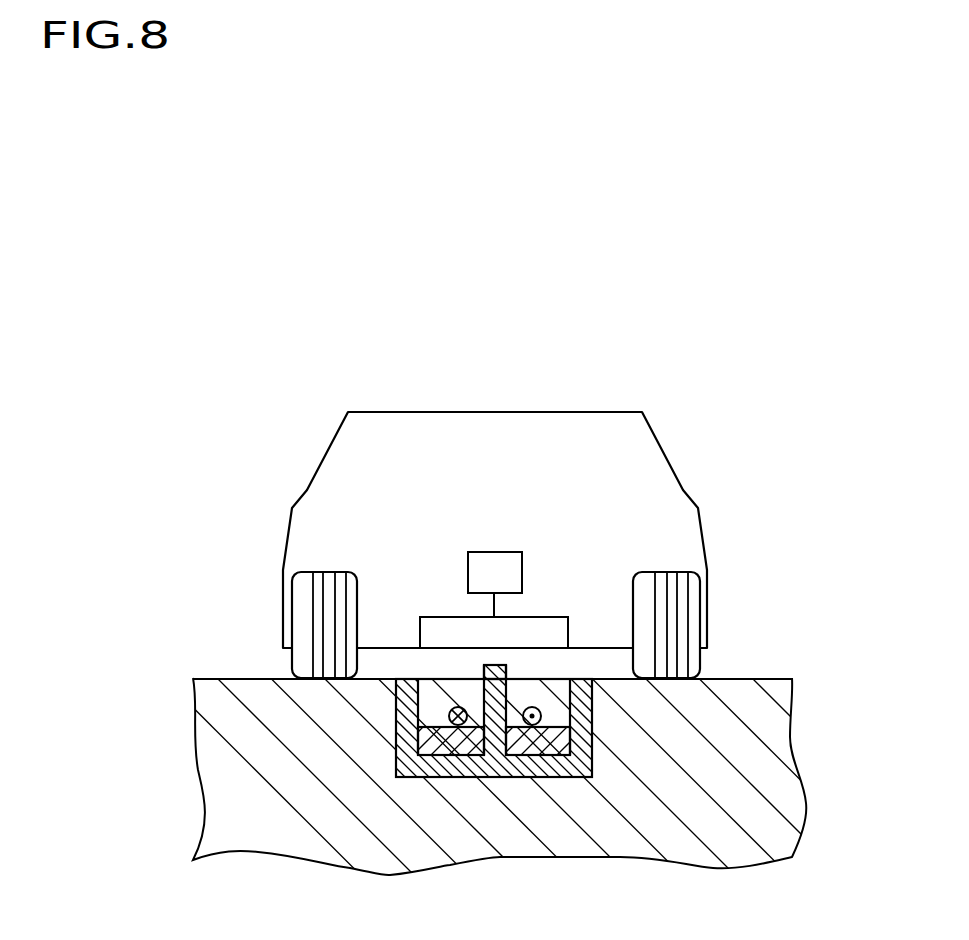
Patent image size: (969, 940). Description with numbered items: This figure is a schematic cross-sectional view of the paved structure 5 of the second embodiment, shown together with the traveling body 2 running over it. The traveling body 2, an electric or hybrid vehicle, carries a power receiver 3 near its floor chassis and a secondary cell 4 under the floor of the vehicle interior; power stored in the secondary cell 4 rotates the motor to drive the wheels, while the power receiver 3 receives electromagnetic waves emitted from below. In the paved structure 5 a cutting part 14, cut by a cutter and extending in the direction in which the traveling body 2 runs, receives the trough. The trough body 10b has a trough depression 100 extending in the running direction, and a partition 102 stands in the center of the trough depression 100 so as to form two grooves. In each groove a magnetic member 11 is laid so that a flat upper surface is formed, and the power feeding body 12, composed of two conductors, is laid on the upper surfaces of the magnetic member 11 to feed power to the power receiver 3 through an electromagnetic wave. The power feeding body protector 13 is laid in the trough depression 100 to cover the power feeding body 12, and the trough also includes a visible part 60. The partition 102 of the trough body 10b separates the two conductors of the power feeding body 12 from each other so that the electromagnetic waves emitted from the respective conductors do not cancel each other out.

The traveling body 2 is at (668, 449).
The power receiver 3 is at (443, 627).
The secondary cell 4 is at (482, 563).
The paved structure 5 is at (775, 730).
The power feeding body protector 13 is at (428, 687).
The visible part 60 is at (496, 673).
The trough depression 100 is at (413, 741).
The cutting part 14 is at (578, 753).
The trough body 10b is at (419, 765).
The magnetic member 11 is at (450, 746).
The power feeding body 12 is at (457, 742).
The partition 102 is at (492, 732).